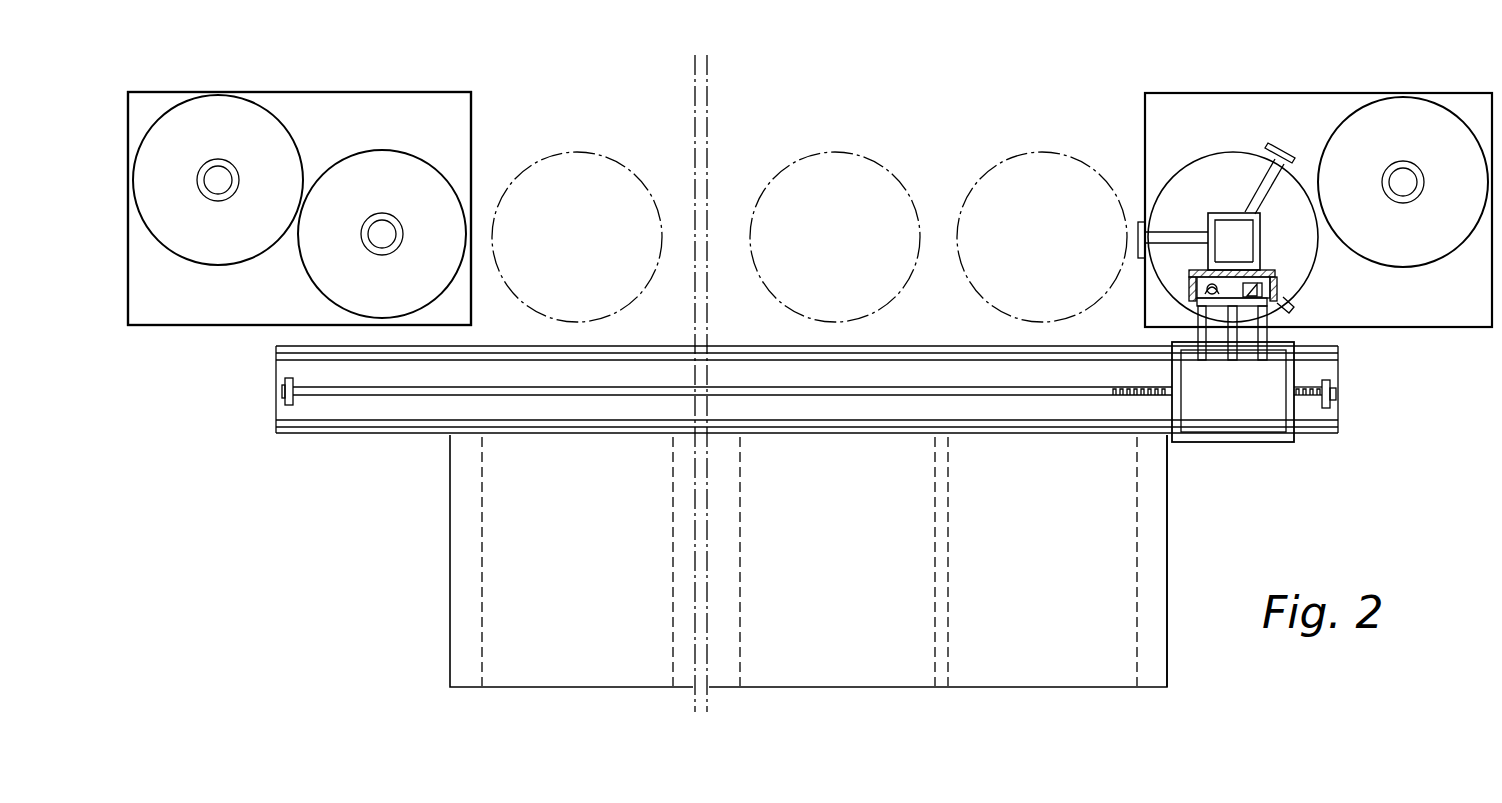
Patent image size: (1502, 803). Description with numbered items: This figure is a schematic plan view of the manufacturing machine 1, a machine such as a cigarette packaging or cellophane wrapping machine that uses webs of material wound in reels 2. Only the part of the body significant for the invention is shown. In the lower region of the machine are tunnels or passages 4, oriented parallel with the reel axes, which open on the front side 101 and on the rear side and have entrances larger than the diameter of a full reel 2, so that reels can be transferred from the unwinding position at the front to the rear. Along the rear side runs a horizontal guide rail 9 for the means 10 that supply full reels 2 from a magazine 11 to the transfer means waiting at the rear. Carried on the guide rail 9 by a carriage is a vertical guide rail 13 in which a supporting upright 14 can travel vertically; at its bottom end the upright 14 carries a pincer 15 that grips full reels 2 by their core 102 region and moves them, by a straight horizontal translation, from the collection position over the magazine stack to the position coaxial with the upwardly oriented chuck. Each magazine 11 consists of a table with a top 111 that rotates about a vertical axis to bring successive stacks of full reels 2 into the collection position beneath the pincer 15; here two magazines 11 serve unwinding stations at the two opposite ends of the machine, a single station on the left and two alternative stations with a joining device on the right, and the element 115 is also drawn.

The manufacturing machine 1 is at (1170, 574).
The reel 2 is at (284, 138).
The tunnel or passage 4 is at (578, 680).
The horizontal guide rail 9 is at (728, 345).
The supply means 10 is at (1276, 448).
The magazine 11 is at (399, 88).
The vertical guide rail 13 is at (1253, 292).
The supporting upright 14 is at (1275, 273).
The pincer 15 is at (1290, 157).
The front side 101 is at (1104, 688).
The core 102 is at (216, 160).
The table top 111 is at (458, 105).
The stop 115 is at (1140, 222).